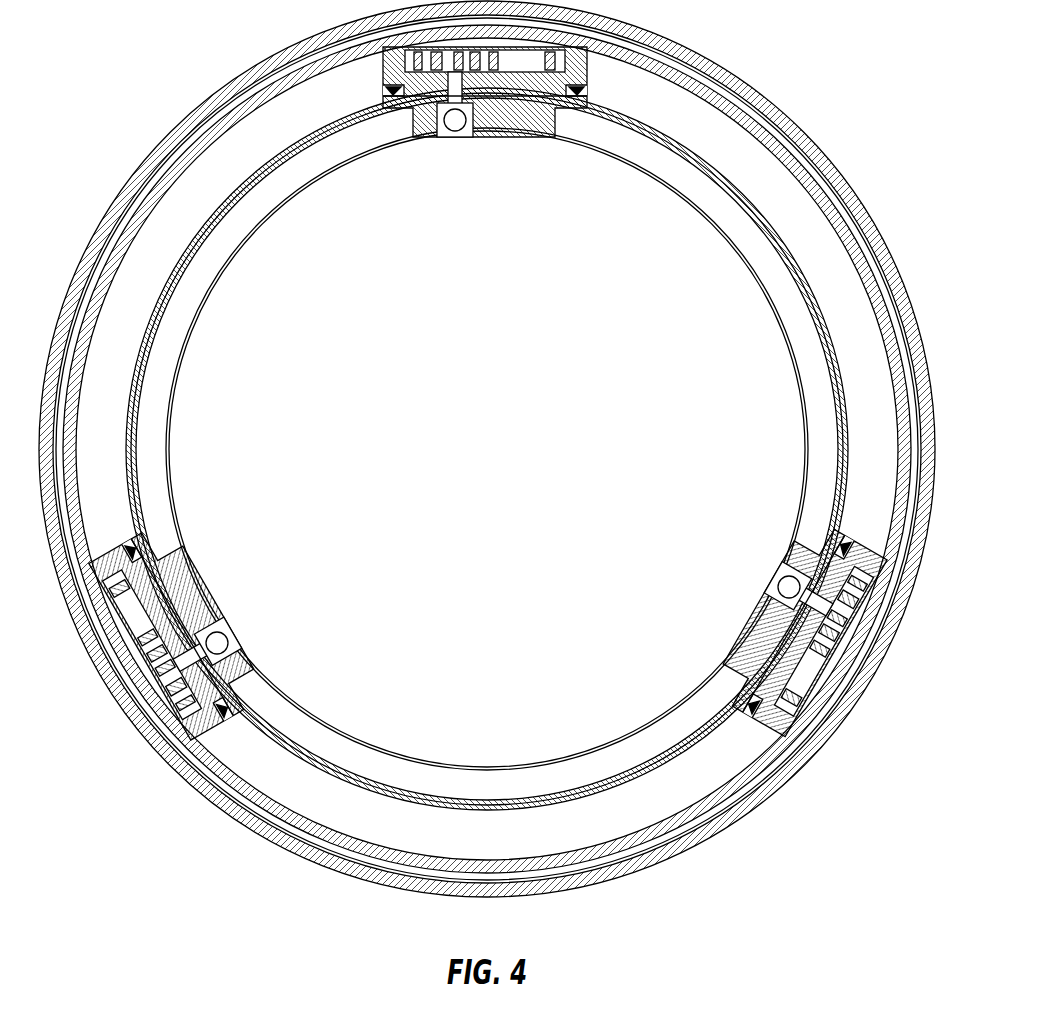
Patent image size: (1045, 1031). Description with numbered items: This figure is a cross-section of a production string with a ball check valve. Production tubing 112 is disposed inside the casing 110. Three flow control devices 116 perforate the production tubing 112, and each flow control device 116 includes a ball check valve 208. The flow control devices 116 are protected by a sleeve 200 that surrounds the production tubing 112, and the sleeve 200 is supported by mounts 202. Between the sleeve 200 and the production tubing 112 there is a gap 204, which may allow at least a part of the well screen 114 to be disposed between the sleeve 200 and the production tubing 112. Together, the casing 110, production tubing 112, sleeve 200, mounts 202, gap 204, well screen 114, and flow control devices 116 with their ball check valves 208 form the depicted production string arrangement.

The casing 110 is at (298, 48).
The production tubing 112 is at (765, 252).
The well screen 114 is at (628, 783).
The flow control devices 116 is at (537, 138).
The sleeve 200 is at (708, 87).
The mounts 202 is at (753, 173).
The gap 204 is at (678, 760).
The ball check valve 208 is at (455, 146).